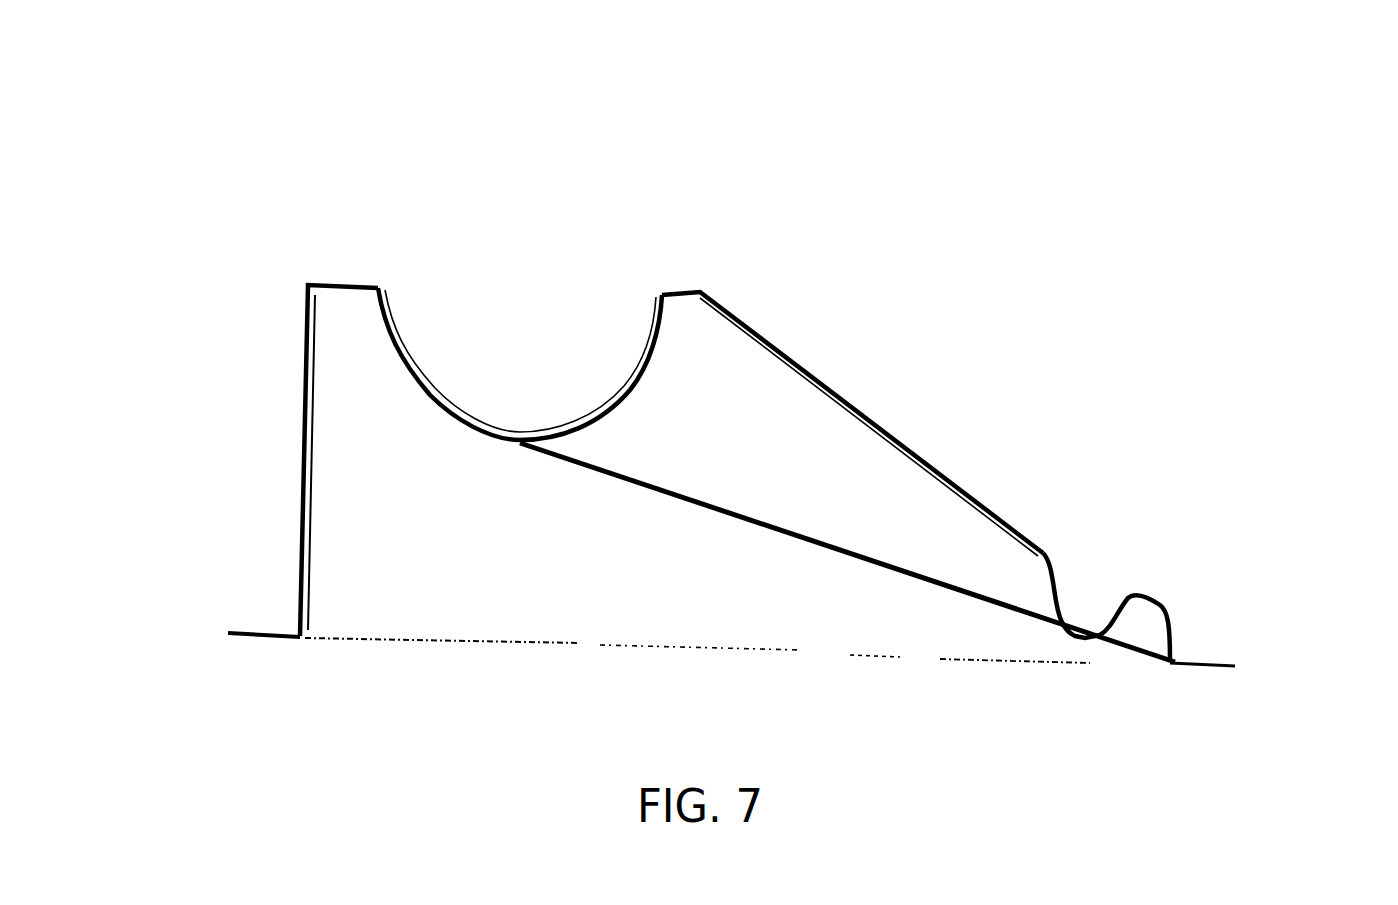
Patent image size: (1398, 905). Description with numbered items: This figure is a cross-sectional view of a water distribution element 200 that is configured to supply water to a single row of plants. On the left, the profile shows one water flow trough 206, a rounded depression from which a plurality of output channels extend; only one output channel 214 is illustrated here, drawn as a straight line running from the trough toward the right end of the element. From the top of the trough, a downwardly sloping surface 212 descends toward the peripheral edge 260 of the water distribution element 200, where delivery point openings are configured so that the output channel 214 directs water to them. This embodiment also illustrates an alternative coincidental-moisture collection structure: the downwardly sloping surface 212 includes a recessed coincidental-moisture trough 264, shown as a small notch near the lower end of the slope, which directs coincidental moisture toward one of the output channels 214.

The water distribution element 200 is at (218, 100).
The water flow trough 206 is at (525, 355).
The downwardly sloping surface 212 is at (792, 353).
The output channel 214 is at (790, 455).
The coincidental-moisture trough 264 is at (1088, 600).
The peripheral edge 260 is at (1178, 632).